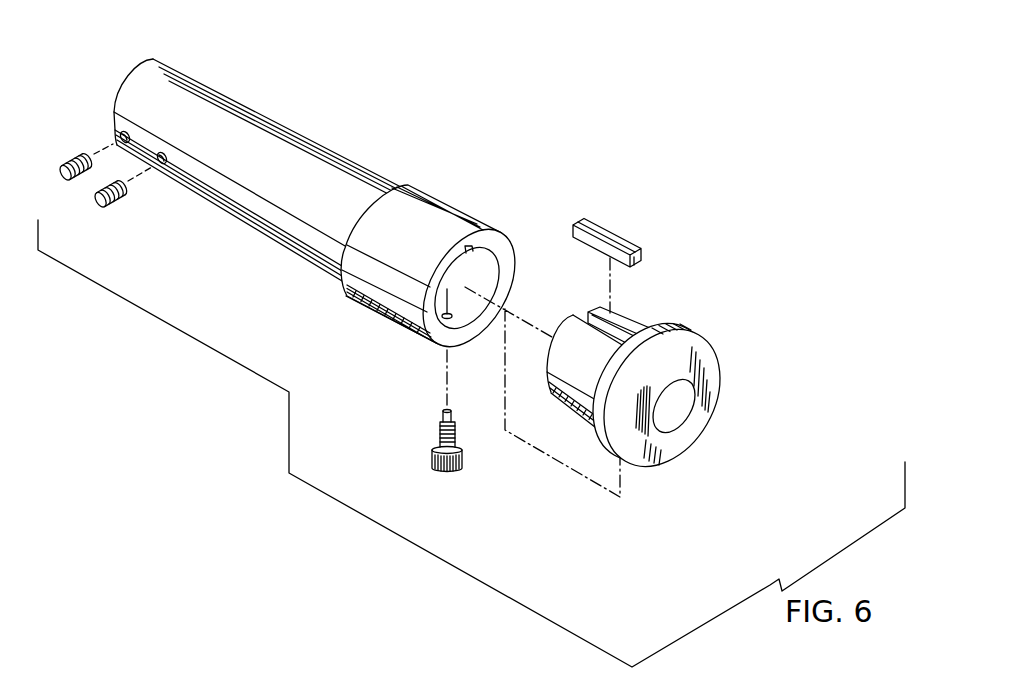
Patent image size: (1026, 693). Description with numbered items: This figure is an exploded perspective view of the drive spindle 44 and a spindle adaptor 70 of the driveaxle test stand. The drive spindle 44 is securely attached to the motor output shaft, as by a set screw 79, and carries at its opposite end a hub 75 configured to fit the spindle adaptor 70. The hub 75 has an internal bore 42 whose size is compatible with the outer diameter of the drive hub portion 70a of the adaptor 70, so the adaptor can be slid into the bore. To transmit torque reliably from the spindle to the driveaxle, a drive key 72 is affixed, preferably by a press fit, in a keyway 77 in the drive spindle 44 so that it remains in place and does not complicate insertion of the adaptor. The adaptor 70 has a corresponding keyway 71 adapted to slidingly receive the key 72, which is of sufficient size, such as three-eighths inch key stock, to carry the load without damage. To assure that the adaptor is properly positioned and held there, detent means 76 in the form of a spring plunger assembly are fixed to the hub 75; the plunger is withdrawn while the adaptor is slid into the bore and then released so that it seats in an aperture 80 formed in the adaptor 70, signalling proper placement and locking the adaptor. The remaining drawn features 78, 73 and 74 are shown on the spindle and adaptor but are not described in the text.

The drive spindle 44 is at (238, 118).
The closed end of housing 78 is at (170, 86).
The set screw 79 is at (76, 163).
The hub 75 is at (443, 218).
The keyway 77 is at (468, 248).
The internal bore 42 is at (487, 277).
The drive key 72 is at (607, 233).
The keyway 71 is at (622, 333).
The flange 73 is at (702, 370).
The coupling bore 74 is at (663, 410).
The spindle adaptor 70 is at (629, 405).
The drive hub portion 70a is at (585, 375).
The aperture 80 is at (615, 399).
The detent means 76 is at (432, 432).